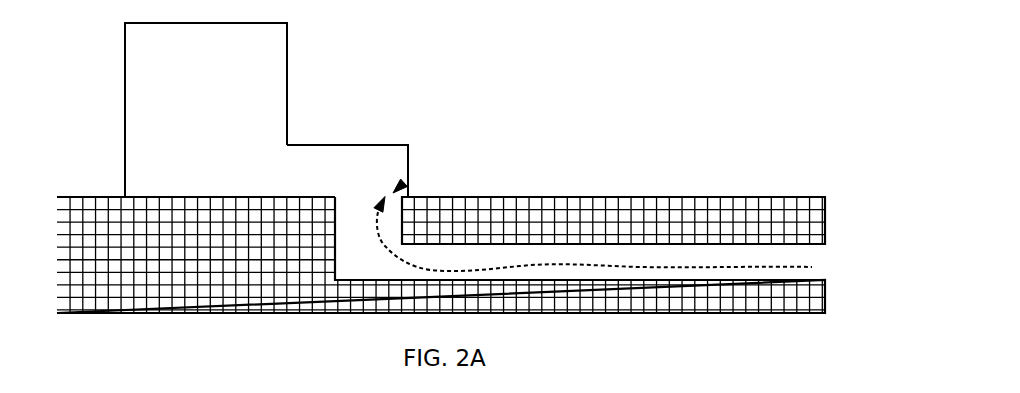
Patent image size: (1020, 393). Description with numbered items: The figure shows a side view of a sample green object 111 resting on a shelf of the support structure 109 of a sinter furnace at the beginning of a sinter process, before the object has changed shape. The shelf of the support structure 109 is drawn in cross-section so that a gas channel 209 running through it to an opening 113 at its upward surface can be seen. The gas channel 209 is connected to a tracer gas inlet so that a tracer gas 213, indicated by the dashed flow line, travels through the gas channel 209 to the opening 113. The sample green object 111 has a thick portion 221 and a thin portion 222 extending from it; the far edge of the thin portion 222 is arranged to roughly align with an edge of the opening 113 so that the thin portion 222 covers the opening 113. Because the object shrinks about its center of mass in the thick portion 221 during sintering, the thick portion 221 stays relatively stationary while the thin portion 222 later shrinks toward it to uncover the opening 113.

The support structure 109 is at (440, 220).
The sample green object 111 is at (222, 110).
The opening 113 is at (397, 189).
The gas channel 209 is at (381, 274).
The tracer gas 213 is at (810, 267).
The thick portion 221 is at (221, 100).
The thin portion 222 is at (371, 178).